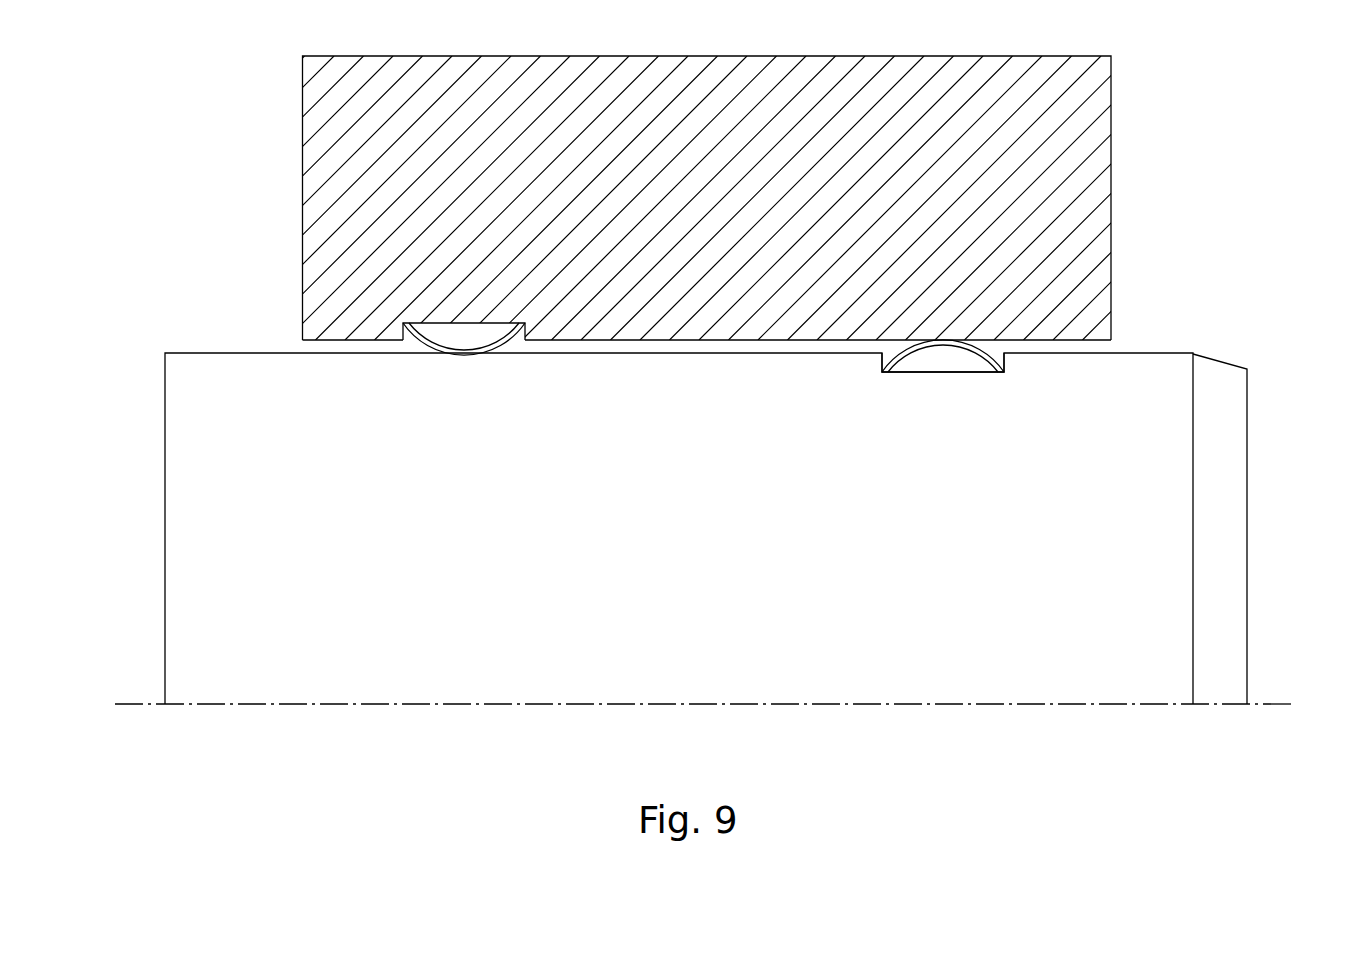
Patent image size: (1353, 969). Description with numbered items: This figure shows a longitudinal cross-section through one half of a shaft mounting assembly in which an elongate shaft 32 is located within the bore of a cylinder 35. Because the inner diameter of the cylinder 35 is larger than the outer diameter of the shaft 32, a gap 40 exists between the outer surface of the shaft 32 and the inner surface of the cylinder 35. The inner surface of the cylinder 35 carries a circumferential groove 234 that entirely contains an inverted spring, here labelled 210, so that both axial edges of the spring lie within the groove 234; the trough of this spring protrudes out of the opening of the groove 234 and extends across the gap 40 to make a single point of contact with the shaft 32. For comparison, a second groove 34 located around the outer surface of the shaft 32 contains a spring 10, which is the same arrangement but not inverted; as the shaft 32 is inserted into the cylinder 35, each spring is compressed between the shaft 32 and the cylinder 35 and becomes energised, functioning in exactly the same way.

The cylinder 35 is at (1111, 187).
The gap 40 is at (1103, 343).
The groove 234 is at (435, 322).
The seal element in recess 210 is at (469, 355).
The shaft 32 is at (1227, 553).
The groove 34 is at (980, 372).
The spring 10 is at (925, 343).